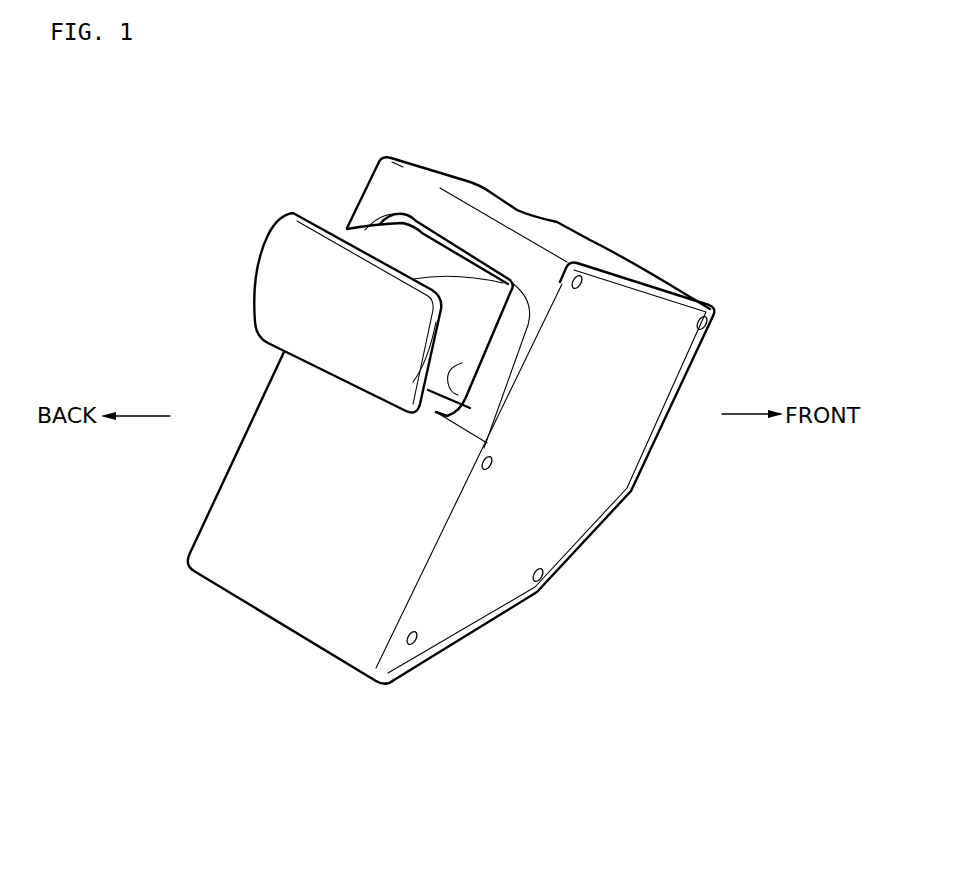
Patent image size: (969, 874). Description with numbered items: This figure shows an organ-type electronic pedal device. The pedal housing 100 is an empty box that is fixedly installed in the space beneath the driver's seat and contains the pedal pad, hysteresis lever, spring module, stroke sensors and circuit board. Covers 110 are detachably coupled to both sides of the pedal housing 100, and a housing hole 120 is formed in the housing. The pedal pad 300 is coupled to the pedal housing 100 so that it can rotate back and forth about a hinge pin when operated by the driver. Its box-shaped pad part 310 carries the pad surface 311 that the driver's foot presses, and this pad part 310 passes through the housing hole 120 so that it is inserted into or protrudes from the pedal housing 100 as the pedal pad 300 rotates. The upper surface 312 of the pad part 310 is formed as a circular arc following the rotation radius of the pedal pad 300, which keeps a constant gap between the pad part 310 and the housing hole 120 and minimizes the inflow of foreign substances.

The pedal housing 100 is at (258, 572).
The cover 110 is at (573, 507).
The housing hole 120 is at (462, 363).
The pedal pad 300 is at (243, 313).
The pad part 310 is at (465, 327).
The pad surface 311 is at (290, 266).
The upper surface 312 is at (410, 255).